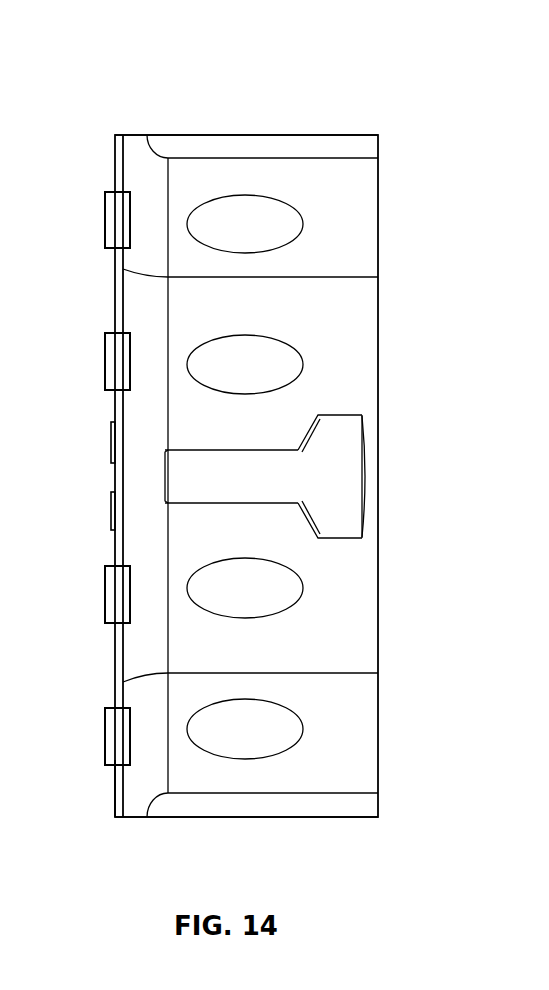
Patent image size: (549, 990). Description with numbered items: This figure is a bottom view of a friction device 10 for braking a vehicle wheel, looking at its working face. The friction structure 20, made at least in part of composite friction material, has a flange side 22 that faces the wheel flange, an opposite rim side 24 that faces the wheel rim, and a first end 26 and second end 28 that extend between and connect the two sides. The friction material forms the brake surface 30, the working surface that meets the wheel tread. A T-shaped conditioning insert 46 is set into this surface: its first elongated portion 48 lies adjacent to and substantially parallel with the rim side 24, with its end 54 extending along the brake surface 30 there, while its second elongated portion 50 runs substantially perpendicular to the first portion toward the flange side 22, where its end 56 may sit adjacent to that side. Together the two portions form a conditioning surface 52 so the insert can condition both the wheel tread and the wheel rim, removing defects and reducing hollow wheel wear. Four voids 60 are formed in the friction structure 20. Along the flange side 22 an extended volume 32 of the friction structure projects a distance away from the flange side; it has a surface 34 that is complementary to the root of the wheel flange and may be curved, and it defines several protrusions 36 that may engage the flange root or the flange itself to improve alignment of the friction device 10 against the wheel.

The friction device 10 is at (337, 75).
The friction structure 20 is at (360, 180).
The flange side 22 is at (128, 283).
The rim side 24 is at (378, 648).
The first end 26 is at (275, 135).
The second end 28 is at (287, 818).
The brake surface 30 is at (357, 778).
The extended volume 32 is at (140, 168).
The surface 34 is at (140, 792).
The protrusions 36 is at (117, 220).
The conditioning insert 46 is at (342, 430).
The first elongated portion 48 is at (340, 467).
The second elongated portion 50 is at (198, 489).
The conditioning surface 52 is at (298, 483).
The end of first elongated portion 54 is at (365, 512).
The end of second elongated portion 56 is at (165, 470).
The voids 60 is at (290, 224).